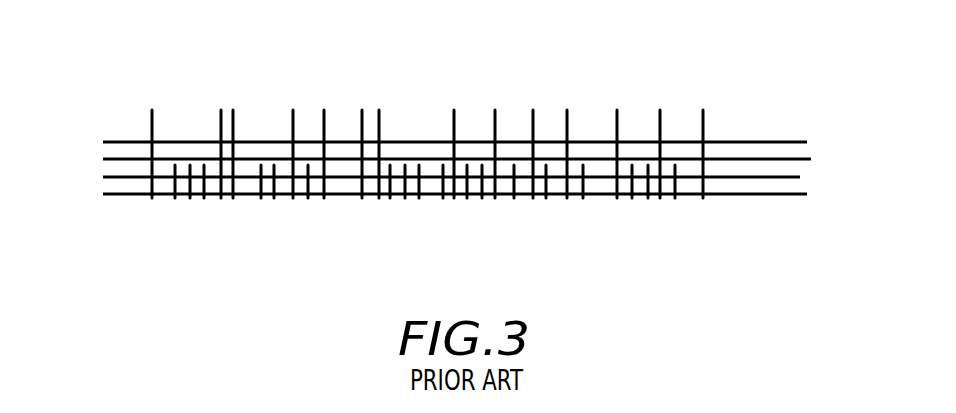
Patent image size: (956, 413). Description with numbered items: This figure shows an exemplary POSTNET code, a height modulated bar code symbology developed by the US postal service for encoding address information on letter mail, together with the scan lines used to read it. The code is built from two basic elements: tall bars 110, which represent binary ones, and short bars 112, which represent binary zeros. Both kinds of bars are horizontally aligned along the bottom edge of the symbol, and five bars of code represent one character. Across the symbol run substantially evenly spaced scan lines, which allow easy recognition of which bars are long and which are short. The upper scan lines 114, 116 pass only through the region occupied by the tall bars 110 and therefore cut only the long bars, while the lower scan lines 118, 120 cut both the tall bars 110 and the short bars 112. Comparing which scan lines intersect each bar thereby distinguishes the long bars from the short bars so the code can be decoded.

The tall bars 110 is at (233, 110).
The short bars 112 is at (204, 198).
The scan line 114 is at (777, 138).
The scan line 116 is at (800, 150).
The scan line 118 is at (800, 176).
The scan line 120 is at (793, 195).